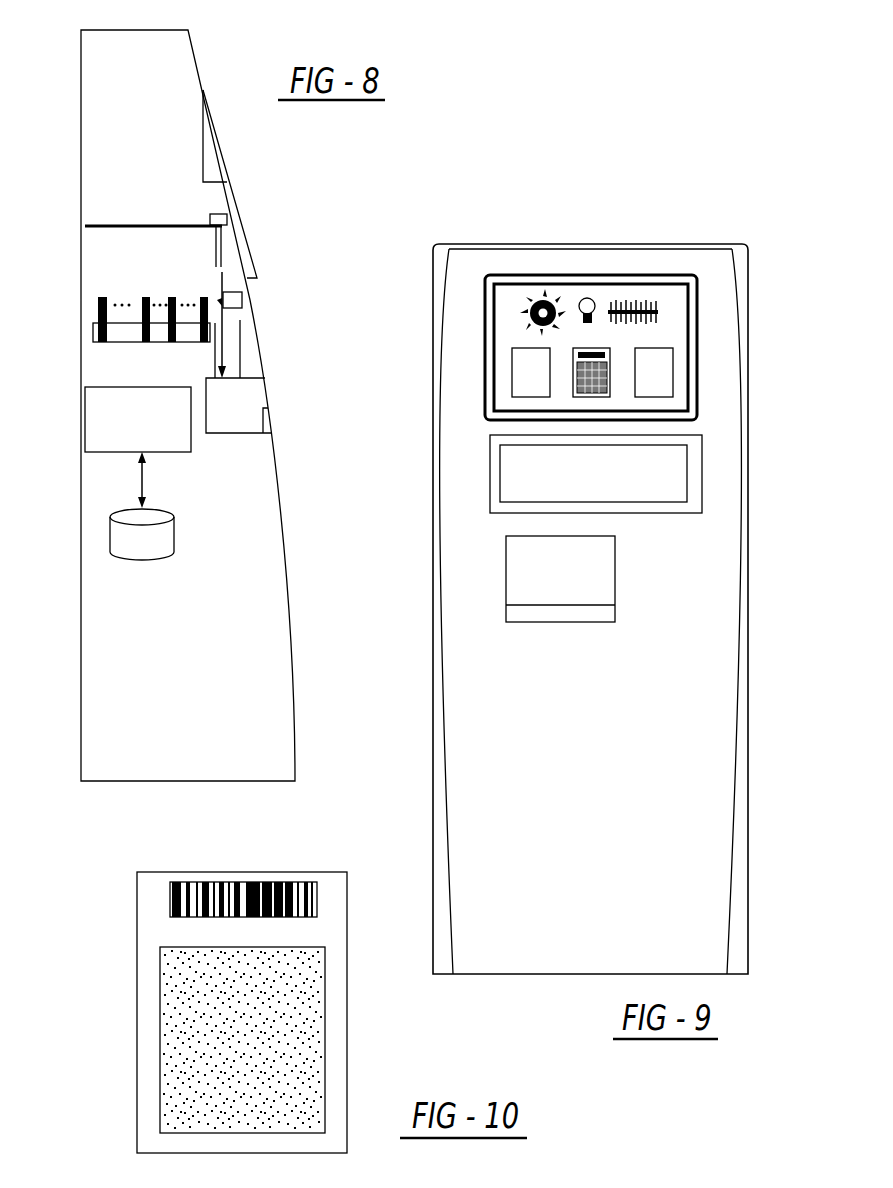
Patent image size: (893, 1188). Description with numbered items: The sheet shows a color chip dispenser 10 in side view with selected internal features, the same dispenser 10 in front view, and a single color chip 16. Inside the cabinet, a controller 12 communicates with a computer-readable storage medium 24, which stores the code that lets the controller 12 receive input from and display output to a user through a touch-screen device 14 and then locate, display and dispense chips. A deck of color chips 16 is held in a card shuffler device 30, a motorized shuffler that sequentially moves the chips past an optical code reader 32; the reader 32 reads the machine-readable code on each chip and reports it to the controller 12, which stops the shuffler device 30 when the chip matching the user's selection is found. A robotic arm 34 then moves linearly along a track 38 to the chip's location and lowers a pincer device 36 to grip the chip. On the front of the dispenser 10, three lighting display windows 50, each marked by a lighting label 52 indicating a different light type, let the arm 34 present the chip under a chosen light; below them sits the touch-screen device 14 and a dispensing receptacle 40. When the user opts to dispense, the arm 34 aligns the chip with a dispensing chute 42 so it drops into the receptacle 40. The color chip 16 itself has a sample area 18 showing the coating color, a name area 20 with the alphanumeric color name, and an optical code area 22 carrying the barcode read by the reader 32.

In FIG. 8, the color chip dispenser 10 is at (188, 393).
In FIG. 9, the color chip dispenser 10 is at (590, 549).
In FIG. 8, the controller 12 is at (108, 447).
In FIG. 8, the touch-screen device 14 is at (261, 184).
In FIG. 9, the touch-screen device 14 is at (654, 474).
In FIG. 10, the color chip 16 is at (206, 1012).
In FIG. 10, the sample area 18 is at (293, 1040).
In FIG. 10, the name area 20 is at (300, 931).
In FIG. 10, the optical code area 22 is at (294, 888).
In FIG. 8, the computer-readable storage medium 24 is at (98, 537).
In FIG. 8, the card shuffler device 30 is at (121, 322).
In FIG. 8, the optical code reader 32 is at (267, 287).
In FIG. 8, the robotic arm 34 is at (185, 185).
In FIG. 8, the pincer device 36 is at (191, 302).
In FIG. 8, the track 38 is at (128, 186).
In FIG. 9, the dispensing receptacle 40 is at (492, 579).
In FIG. 8, the dispensing chute 42 is at (261, 376).
In FIG. 8, the display windows 50 is at (243, 136).
In FIG. 9, the display windows 50 is at (650, 347).
In FIG. 9, the lighting labels 52 is at (509, 308).